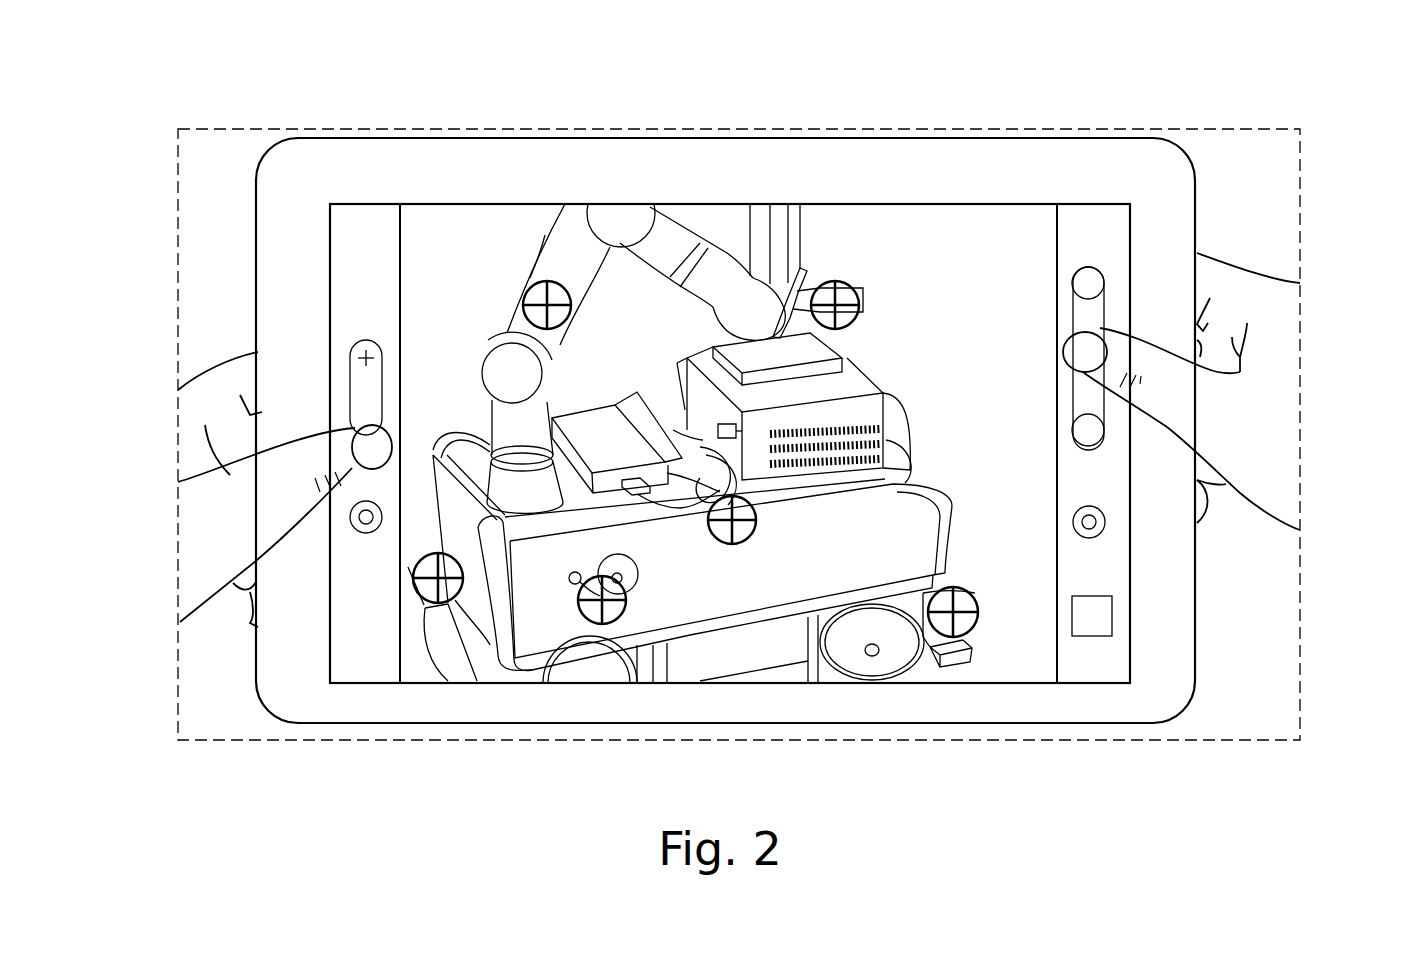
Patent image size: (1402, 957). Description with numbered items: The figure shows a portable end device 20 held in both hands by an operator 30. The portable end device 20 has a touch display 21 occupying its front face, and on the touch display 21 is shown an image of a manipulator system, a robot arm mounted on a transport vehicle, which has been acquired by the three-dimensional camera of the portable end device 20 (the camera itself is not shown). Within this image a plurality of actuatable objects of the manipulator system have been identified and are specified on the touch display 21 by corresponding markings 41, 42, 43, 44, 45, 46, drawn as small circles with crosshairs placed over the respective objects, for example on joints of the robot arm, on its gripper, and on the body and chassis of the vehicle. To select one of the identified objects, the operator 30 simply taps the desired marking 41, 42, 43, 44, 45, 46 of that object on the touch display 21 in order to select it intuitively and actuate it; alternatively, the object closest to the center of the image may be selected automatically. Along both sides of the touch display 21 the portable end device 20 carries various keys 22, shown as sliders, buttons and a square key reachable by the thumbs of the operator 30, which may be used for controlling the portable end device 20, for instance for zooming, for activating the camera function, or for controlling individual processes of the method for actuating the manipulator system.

The portable end device 20 is at (368, 113).
The touch display 21 is at (1000, 245).
The keys 22 is at (352, 357).
The operator 30 is at (218, 383).
The marking 41 is at (549, 280).
The marking 42 is at (838, 280).
The marking 43 is at (730, 545).
The marking 44 is at (600, 625).
The marking 45 is at (951, 637).
The marking 46 is at (434, 603).